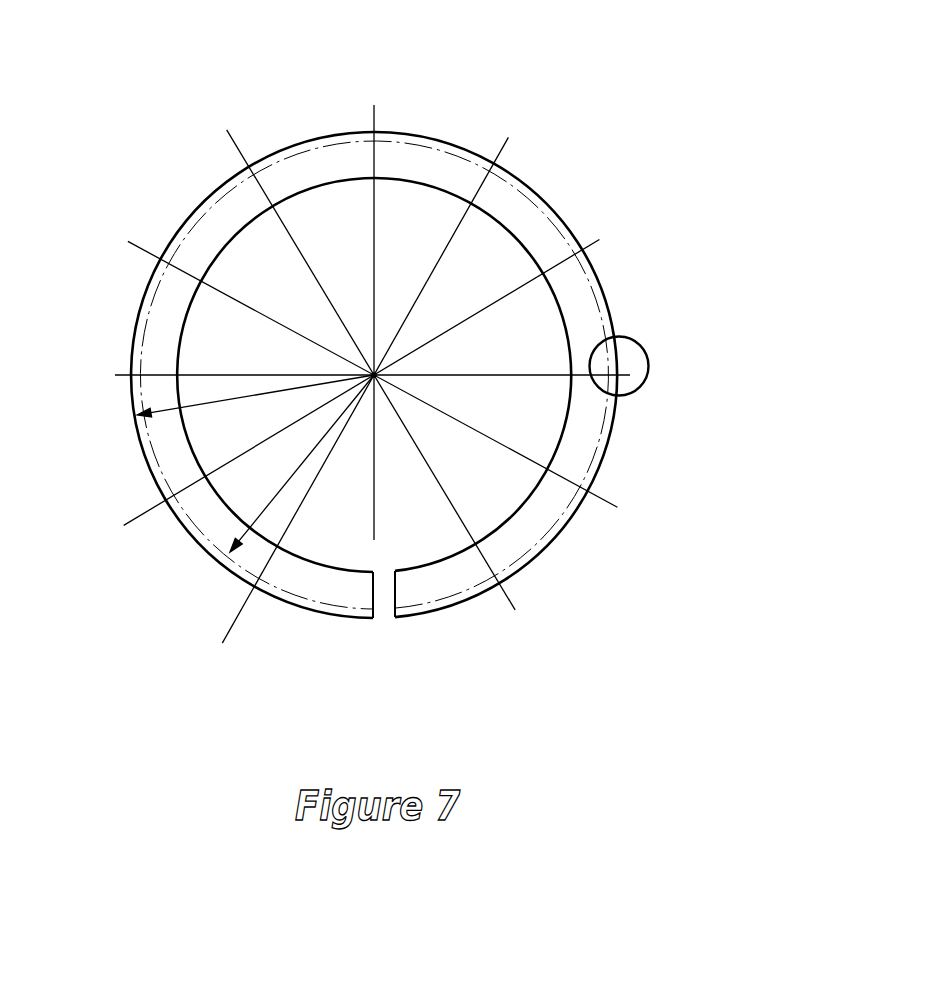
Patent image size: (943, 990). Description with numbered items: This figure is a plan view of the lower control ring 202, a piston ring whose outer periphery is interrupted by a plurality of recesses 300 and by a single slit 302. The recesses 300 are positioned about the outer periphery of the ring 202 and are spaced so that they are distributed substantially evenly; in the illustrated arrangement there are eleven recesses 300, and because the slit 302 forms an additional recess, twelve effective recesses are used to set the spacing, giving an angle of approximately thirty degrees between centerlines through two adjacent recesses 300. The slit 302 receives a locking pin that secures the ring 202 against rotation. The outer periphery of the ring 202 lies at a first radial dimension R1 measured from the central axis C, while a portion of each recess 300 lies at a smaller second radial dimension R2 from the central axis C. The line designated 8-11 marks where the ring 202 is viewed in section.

The lower control ring 202 is at (425, 162).
The recesses 300 is at (374, 132).
The slit 302 is at (375, 590).
The detail region shown in Figures 8-11 is at (648, 360).
The first radial dimension R1 is at (203, 403).
The second radial dimension R2 is at (302, 463).
The central axis C is at (374, 375).